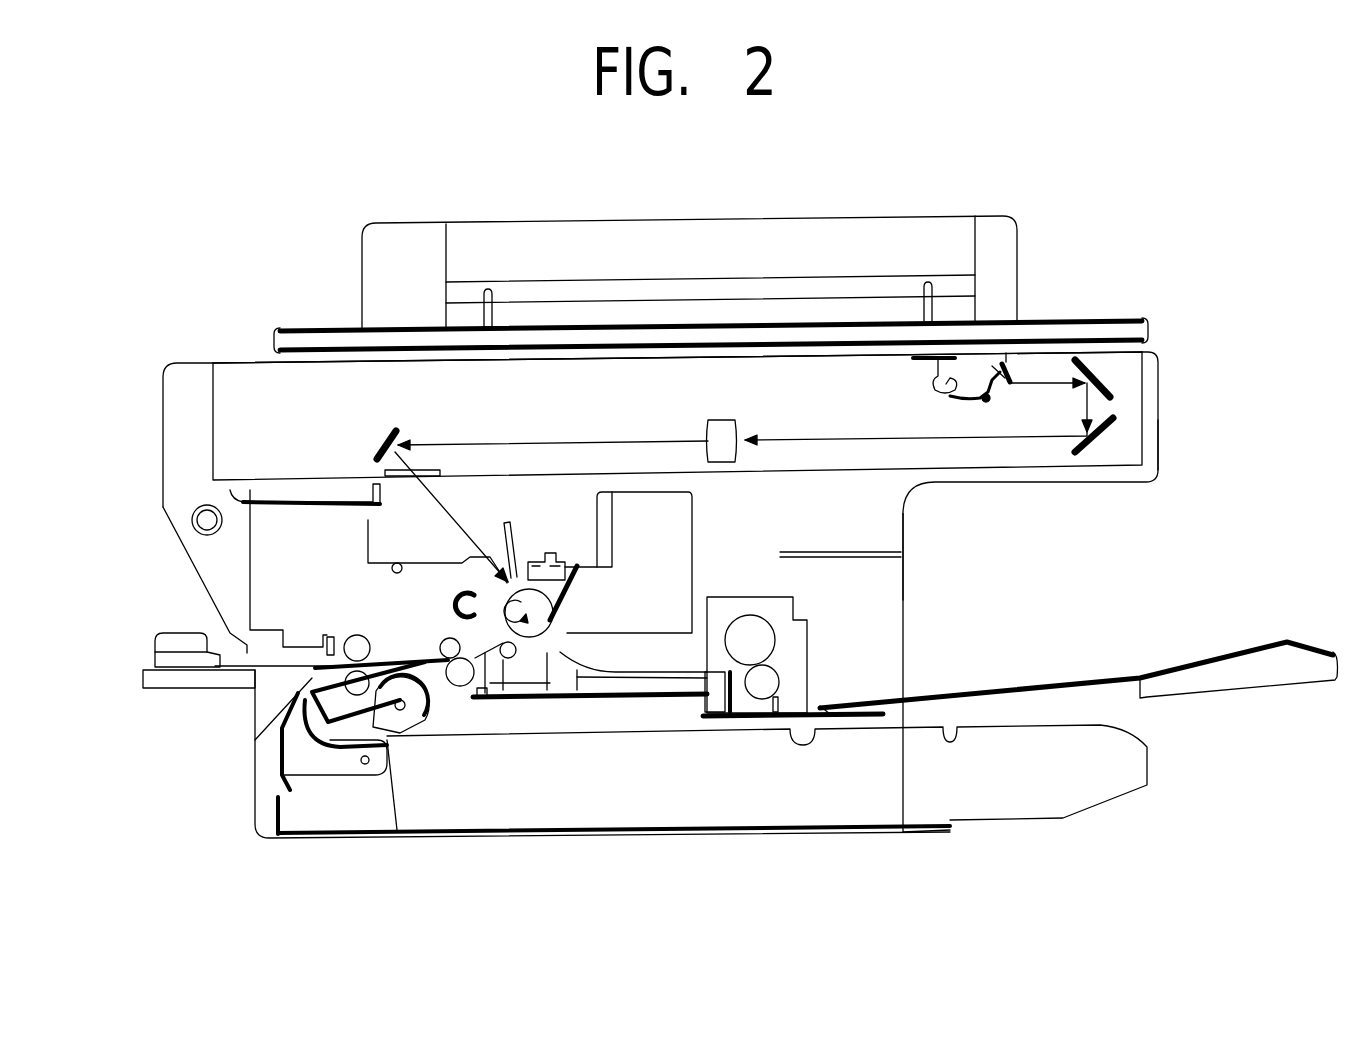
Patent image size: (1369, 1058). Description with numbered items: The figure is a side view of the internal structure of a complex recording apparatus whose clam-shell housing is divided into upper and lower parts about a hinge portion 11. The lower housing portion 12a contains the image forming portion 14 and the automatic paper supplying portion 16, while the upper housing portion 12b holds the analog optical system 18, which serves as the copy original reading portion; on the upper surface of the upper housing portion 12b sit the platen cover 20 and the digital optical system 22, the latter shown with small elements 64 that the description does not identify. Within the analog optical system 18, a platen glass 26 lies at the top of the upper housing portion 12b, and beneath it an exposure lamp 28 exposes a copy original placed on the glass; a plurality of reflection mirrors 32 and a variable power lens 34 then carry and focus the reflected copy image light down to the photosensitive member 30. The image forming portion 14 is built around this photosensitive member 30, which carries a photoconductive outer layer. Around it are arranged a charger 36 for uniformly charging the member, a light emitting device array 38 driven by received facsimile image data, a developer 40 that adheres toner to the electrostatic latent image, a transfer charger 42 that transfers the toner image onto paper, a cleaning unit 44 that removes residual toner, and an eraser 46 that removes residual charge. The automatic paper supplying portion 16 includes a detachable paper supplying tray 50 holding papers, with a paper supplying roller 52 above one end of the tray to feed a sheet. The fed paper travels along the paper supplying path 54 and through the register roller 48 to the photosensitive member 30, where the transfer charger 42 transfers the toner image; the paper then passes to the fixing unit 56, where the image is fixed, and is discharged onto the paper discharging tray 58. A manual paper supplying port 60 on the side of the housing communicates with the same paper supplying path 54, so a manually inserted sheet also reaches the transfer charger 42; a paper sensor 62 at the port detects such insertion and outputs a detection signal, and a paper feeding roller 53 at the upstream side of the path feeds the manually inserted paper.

The hinge portion 11 is at (185, 519).
The lower housing portion 12a is at (903, 652).
The upper housing portion 12b is at (1158, 356).
The image forming portion 14 is at (867, 596).
The automatic paper supplying portion 16 is at (1178, 768).
The analog optical system 18 is at (1192, 463).
The platen cover 20 is at (1085, 318).
The digital optical system 22 is at (757, 214).
The platen glass 26 is at (650, 358).
The exposure lamp 28 is at (945, 393).
The photosensitive member 30 is at (556, 622).
The reflection mirrors 32 is at (393, 428).
The variable power lens 34 is at (727, 420).
The charger 36 is at (554, 552).
The light emitting device array 38 is at (503, 540).
The developer 40 is at (357, 547).
The transfer charger 42 is at (552, 686).
The cleaning unit 44 is at (692, 528).
The eraser 46 is at (576, 592).
The register roller 48 is at (457, 686).
The paper supplying tray 50 is at (625, 828).
The paper supplying roller 52 is at (410, 712).
The paper feeding roller 53 is at (356, 634).
The paper supplying path 54 is at (397, 658).
The fixing unit 56 is at (738, 597).
The paper discharging tray 58 is at (1190, 675).
The manual paper supplying port 60 is at (207, 633).
The paper sensor 62 is at (330, 636).
The cover pins 64 is at (490, 292).